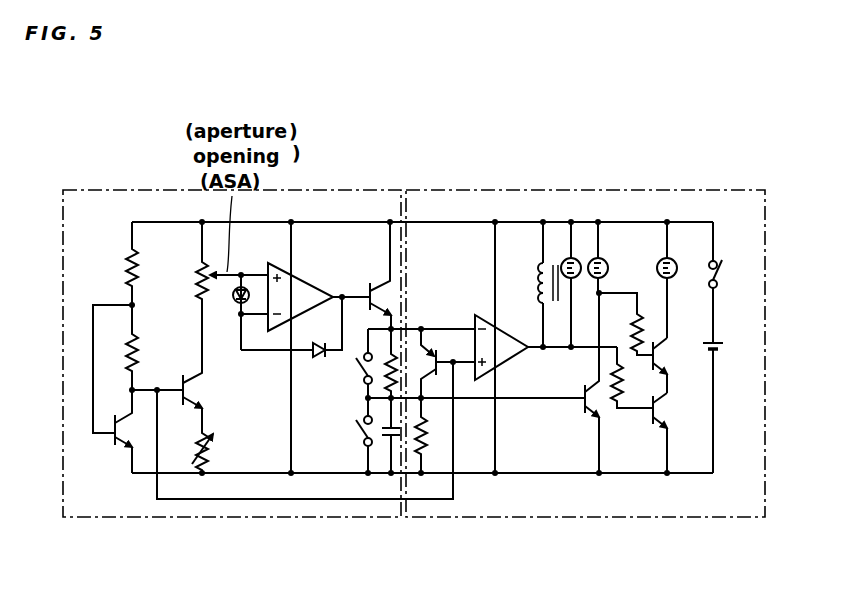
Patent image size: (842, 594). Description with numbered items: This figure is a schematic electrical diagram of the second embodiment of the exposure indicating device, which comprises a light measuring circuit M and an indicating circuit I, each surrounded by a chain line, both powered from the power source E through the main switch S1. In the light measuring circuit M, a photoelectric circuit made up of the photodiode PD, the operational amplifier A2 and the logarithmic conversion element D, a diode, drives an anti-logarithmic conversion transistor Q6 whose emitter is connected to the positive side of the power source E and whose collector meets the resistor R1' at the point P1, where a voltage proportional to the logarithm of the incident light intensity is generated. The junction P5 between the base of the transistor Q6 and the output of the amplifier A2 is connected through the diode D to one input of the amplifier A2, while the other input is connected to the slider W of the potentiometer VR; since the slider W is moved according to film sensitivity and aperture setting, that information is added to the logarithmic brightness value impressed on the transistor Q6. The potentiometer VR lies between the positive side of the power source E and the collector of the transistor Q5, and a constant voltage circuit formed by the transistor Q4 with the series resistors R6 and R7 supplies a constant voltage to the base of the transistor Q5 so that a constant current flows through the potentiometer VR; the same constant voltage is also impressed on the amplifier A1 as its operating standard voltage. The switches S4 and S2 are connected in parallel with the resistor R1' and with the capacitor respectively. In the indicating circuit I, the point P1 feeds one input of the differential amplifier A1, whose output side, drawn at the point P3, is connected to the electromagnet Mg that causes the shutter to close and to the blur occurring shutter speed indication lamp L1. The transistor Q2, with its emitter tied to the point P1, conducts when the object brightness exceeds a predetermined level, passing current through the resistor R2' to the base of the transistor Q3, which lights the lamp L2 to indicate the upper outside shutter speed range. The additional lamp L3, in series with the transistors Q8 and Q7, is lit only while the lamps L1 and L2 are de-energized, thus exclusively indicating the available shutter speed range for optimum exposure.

The light measuring circuit M is at (103, 190).
The indicating circuit I is at (492, 188).
The resistor R6 is at (128, 260).
The resistor R7 is at (128, 352).
The potentiometer VR is at (198, 292).
The slider W is at (228, 272).
The photodiode PD is at (236, 308).
The transistor Q4 is at (110, 433).
The transistor Q5 is at (190, 397).
The operational amplifier A2 is at (287, 297).
The logarithmic conversion element D is at (318, 358).
The junction P5 is at (340, 295).
The anti-logarithmic conversion transistor Q6 is at (374, 290).
The output point P1 is at (388, 329).
The switch S4 is at (366, 370).
The switch S2 is at (364, 432).
The resistor R1' is at (411, 329).
The resistor R2' is at (434, 477).
The transistor Q2 is at (434, 350).
The differential amplifier A1 is at (501, 347).
The connection point P3 is at (545, 350).
The electromagnet Mg is at (540, 282).
The blur occurring shutter speed indication lamp L1 is at (579, 262).
The indicating lamp L2 is at (606, 262).
The lamp L3 is at (672, 262).
The transistor Q3 is at (588, 408).
The transistor Q7 is at (664, 418).
The transistor Q8 is at (662, 356).
The main switch S1 is at (726, 276).
The power source E is at (722, 354).